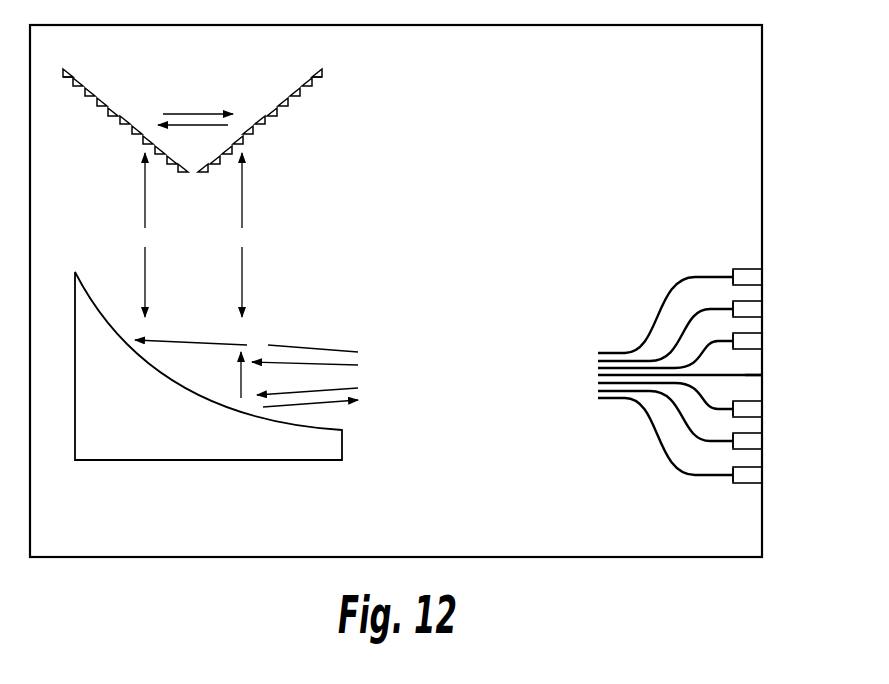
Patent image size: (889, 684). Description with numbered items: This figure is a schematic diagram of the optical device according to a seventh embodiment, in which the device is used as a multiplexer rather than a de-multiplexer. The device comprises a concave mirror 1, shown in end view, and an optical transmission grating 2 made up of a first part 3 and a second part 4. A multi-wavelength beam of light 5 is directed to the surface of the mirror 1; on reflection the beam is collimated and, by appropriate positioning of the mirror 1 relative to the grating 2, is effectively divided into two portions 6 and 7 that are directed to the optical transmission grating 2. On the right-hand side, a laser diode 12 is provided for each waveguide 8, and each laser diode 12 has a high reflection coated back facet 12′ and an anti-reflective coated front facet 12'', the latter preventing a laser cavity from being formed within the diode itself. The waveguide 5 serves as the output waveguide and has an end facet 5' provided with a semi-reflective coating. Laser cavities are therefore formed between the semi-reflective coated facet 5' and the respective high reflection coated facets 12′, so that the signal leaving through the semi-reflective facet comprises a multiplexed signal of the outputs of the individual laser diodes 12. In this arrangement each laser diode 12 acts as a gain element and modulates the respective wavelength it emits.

The concave mirror 1 is at (268, 443).
The optical transmission grating 2 is at (303, 127).
The first part 3 is at (85, 77).
The second part 4 is at (307, 80).
The waveguide 5 is at (715, 352).
The end facet 5' is at (791, 381).
The portion 6 is at (182, 114).
The portion 7 is at (203, 125).
The waveguide 8 is at (645, 338).
The laser diode 12 is at (740, 374).
The high reflection coated back facet 12′ is at (762, 342).
The anti-reflective coated front facet 12'' is at (692, 372).